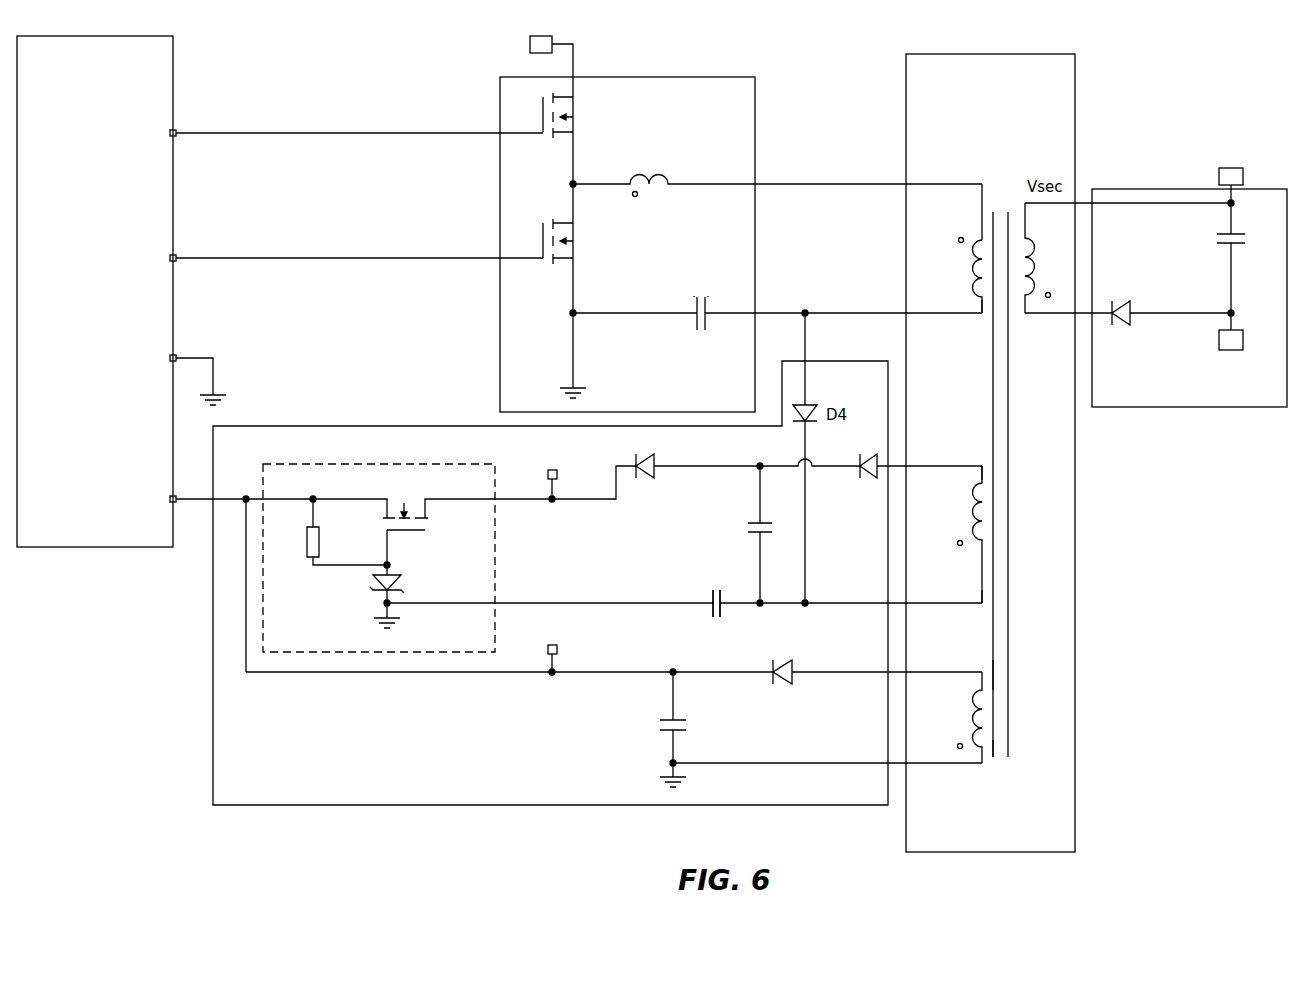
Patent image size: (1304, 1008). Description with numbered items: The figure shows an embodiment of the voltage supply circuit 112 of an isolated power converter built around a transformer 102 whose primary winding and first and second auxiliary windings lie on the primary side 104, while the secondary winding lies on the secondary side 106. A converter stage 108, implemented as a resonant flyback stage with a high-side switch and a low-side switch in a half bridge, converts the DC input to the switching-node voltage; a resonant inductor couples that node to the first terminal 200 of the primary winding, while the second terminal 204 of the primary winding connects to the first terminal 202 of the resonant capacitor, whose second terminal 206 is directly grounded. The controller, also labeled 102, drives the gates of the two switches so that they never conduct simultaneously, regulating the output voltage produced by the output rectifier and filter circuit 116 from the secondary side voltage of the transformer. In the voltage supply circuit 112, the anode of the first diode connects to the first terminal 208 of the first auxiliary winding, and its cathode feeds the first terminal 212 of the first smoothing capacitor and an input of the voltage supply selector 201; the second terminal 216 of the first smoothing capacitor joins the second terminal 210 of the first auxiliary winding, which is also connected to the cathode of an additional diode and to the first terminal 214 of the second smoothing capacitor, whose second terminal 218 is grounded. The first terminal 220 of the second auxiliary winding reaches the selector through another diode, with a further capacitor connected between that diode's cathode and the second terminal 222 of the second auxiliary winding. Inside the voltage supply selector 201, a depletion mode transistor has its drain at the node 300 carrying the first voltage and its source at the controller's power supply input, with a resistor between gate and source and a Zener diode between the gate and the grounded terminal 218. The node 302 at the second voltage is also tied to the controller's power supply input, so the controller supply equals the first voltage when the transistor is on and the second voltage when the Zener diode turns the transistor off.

The transformer 102 is at (546, 444).
The converter stage 108 is at (741, 224).
The voltage supply circuit 112 is at (579, 583).
The output rectifier and filter circuit 116 is at (1156, 276).
The voltage supply selector 201 is at (379, 558).
The first terminal of the primary winding P1 200 is at (980, 180).
The second terminal of the primary winding P1 204 is at (979, 317).
The first terminal of the first auxiliary winding P2 208 is at (980, 462).
The second terminal of the first auxiliary winding P2 210 is at (979, 608).
The first terminal of the second auxiliary winding P3 220 is at (996, 671).
The second terminal of the second auxiliary winding P3 222 is at (998, 769).
The primary side of the transformer 104 is at (993, 790).
The secondary side of the transformer 106 is at (1051, 790).
The second terminal of the resonant capacitor C1 206 is at (693, 293).
The first terminal of the resonant capacitor C1 202 is at (712, 293).
The first terminal of the first smoothing capacitor C2 212 is at (752, 520).
The second terminal of the first smoothing capacitor C2 216 is at (752, 537).
The second terminal of the second smoothing capacitor C3 218 is at (708, 610).
The first terminal of the second smoothing capacitor C3 214 is at (726, 610).
The node at the first voltage Vcc1 300 is at (548, 505).
The node at the second voltage Vcc2 302 is at (548, 678).